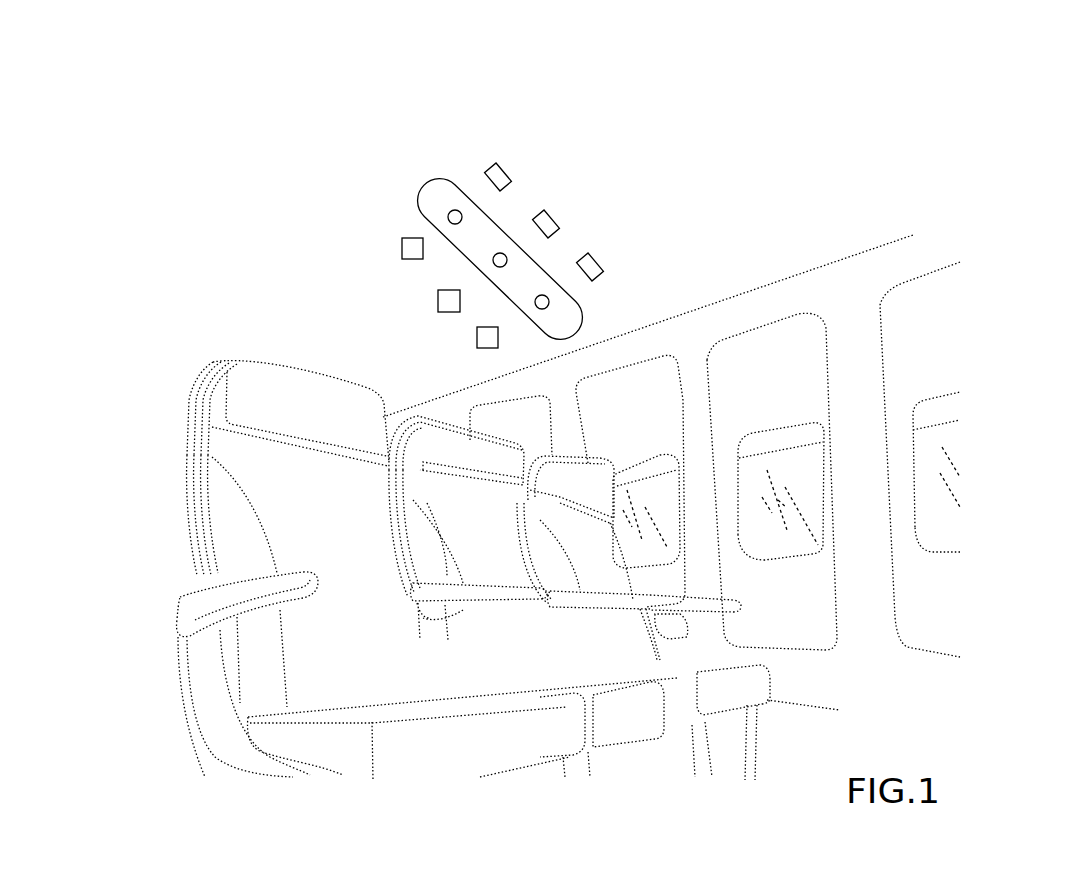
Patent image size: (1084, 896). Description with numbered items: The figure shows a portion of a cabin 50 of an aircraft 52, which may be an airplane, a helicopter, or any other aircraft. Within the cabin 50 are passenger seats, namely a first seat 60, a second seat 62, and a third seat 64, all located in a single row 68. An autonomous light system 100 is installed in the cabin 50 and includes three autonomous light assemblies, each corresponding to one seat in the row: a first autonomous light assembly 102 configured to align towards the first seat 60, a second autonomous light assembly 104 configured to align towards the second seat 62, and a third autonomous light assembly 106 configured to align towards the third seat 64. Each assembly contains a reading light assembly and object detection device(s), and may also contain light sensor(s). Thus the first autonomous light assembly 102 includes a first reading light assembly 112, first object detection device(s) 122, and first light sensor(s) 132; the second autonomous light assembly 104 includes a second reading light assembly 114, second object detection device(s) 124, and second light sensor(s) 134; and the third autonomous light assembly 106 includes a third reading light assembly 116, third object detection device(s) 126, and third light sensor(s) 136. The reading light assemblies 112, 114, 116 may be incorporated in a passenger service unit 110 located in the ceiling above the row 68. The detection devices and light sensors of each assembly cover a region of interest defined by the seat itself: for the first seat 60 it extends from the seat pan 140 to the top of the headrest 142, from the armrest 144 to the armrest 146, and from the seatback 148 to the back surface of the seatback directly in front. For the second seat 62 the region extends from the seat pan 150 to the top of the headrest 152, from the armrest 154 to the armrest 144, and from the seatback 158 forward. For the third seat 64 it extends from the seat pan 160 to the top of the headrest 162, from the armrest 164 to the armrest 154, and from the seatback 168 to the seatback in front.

The cabin 50 is at (853, 267).
The aircraft 52 is at (135, 224).
The first seat 60 is at (373, 570).
The second seat 62 is at (526, 553).
The third seat 64 is at (678, 582).
The row 68 is at (165, 566).
The autonomous light system 100 is at (531, 190).
The first autonomous light assembly 102 is at (429, 160).
The second autonomous light assembly 104 is at (522, 211).
The third autonomous light assembly 106 is at (602, 290).
The passenger service unit 110 is at (458, 247).
The first reading light assembly 112 is at (450, 219).
The second reading light assembly 114 is at (452, 295).
The third reading light assembly 116 is at (545, 303).
The first object detection device 122 is at (479, 140).
The second object detection device 124 is at (566, 196).
The third object detection device 126 is at (594, 270).
The first light sensor 132 is at (413, 250).
The second light sensor 134 is at (501, 256).
The third light sensor 136 is at (494, 344).
The seat pan 140 is at (467, 761).
The headrest 142 is at (319, 425).
The armrest 144 is at (463, 601).
The armrest 146 is at (200, 618).
The seatback 148 is at (345, 568).
The seat pan 150 is at (634, 727).
The headrest 152 is at (485, 458).
The armrest 154 is at (617, 598).
The seatback 158 is at (507, 568).
The seat pan 160 is at (749, 700).
The headrest 162 is at (592, 493).
The armrest 164 is at (720, 603).
The seatback 168 is at (609, 570).